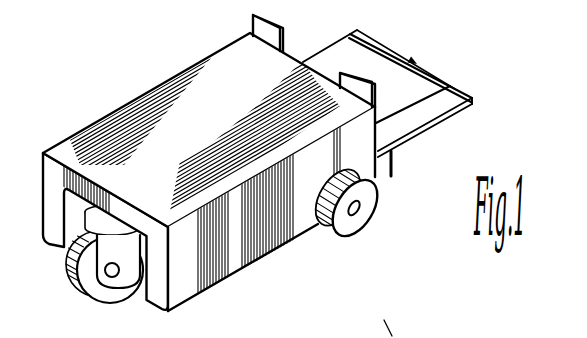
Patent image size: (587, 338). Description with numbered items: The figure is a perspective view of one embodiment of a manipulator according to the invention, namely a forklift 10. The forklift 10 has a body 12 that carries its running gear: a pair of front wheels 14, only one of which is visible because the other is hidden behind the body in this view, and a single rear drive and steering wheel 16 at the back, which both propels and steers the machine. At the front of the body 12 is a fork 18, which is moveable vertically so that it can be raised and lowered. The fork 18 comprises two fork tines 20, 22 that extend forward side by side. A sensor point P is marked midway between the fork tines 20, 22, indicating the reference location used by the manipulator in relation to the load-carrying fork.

The forklift 10 is at (142, 66).
The body 12 is at (156, 91).
The front wheels 14 is at (371, 207).
The rear drive and steering wheel 16 is at (85, 283).
The fork 18 is at (392, 158).
The fork tine 20 is at (361, 31).
The fork tine 22 is at (462, 88).